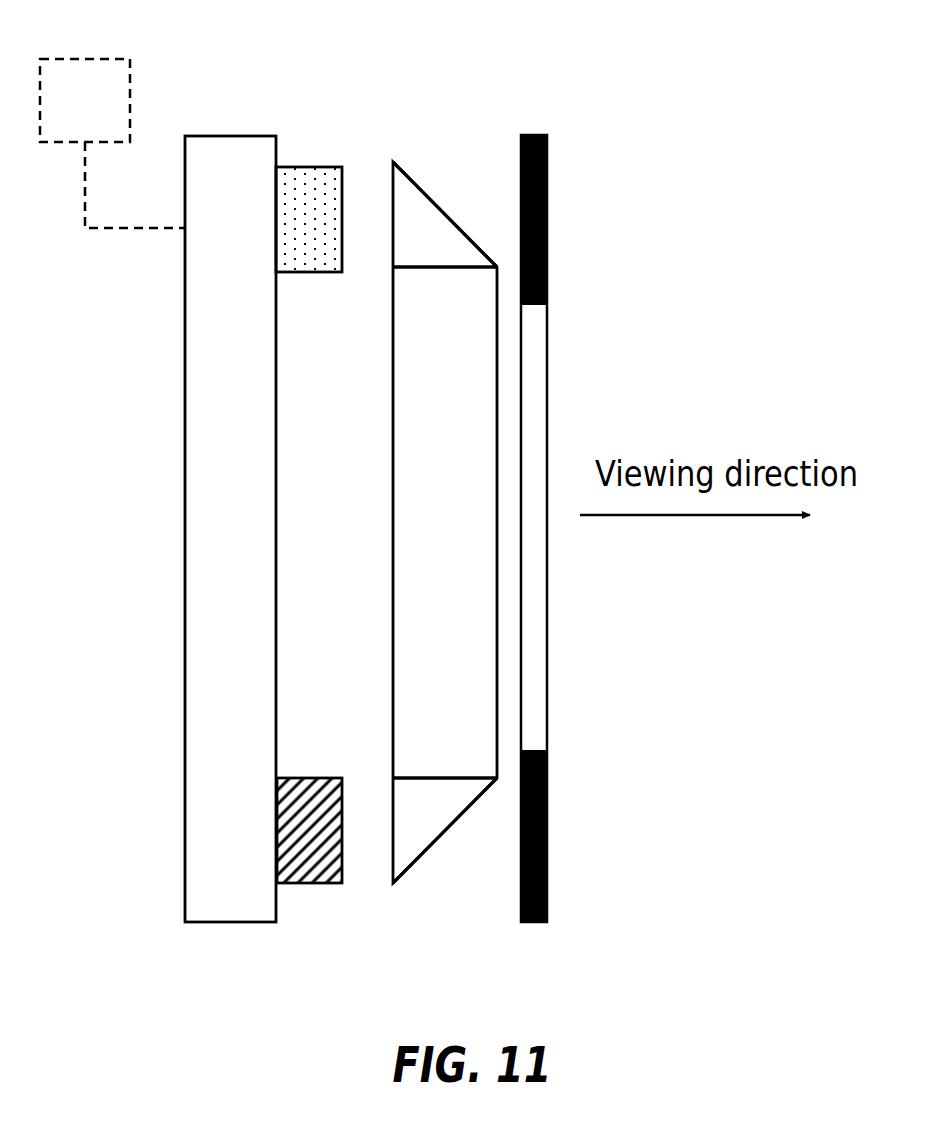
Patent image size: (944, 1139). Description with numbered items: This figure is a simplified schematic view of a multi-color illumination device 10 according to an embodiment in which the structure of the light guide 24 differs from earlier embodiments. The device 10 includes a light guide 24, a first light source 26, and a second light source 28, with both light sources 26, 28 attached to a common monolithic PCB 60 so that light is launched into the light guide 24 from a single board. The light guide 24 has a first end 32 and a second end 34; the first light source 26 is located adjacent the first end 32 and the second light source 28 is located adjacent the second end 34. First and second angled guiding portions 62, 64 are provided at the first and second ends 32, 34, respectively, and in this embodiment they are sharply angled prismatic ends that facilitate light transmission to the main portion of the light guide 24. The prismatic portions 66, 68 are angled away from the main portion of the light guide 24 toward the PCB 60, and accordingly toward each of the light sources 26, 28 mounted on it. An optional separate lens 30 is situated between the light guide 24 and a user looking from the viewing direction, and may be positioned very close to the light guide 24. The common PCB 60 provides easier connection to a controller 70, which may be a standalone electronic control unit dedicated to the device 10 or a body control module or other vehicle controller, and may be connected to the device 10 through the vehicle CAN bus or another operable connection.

The multi-color illumination device 10 is at (604, 121).
The light guide 24 is at (412, 445).
The first light source 26 is at (297, 180).
The second light source 28 is at (303, 878).
The lens 30 is at (535, 368).
The first end 32 is at (417, 215).
The second end 34 is at (408, 847).
The PCB 60 is at (197, 360).
The first angled guiding portion 62 is at (408, 195).
The second angled guiding portion 64 is at (398, 865).
The prismatic portion 66 is at (436, 223).
The prismatic portion 68 is at (442, 808).
The controller 70 is at (130, 88).